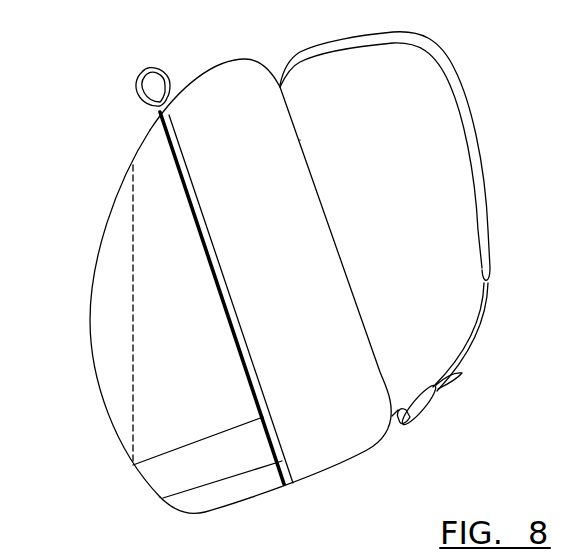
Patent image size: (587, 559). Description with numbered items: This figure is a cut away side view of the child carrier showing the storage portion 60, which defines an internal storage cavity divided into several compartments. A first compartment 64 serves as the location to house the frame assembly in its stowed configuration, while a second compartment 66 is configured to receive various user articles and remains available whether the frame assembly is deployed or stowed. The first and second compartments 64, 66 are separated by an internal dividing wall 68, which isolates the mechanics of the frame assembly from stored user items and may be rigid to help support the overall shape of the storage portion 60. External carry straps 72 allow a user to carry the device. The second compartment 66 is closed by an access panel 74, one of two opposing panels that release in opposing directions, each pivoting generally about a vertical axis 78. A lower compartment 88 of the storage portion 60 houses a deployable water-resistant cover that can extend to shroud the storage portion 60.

The storage portion 60 is at (205, 67).
The first compartment 64 is at (250, 117).
The second compartment 66 is at (150, 170).
The internal dividing wall 68 is at (290, 463).
The external carry straps 72 is at (468, 110).
The access panel 74 is at (90, 273).
The vertical axis 78 is at (122, 377).
The lower compartment 88 is at (227, 490).